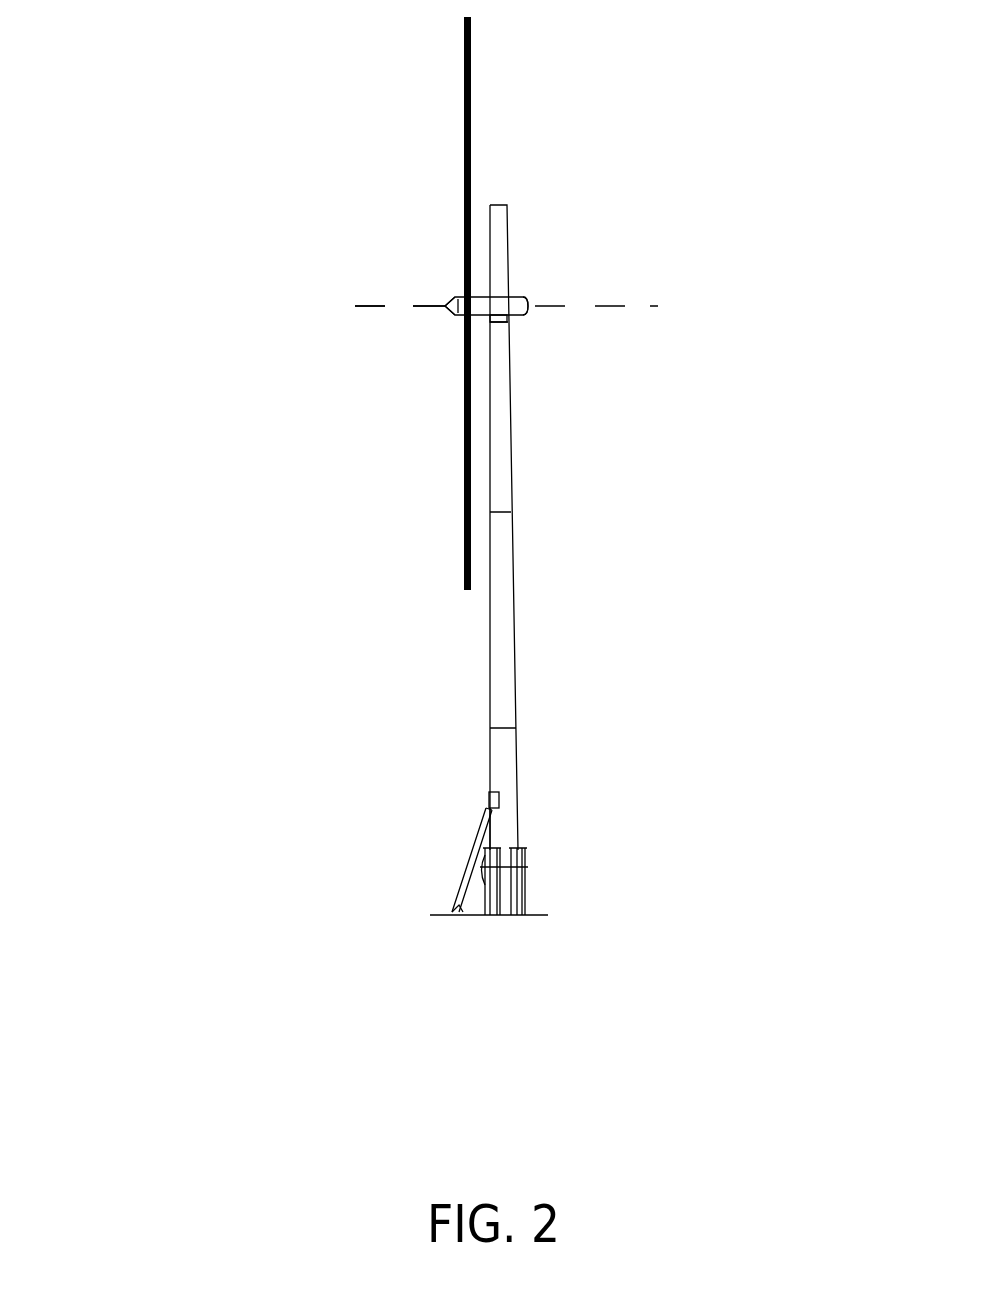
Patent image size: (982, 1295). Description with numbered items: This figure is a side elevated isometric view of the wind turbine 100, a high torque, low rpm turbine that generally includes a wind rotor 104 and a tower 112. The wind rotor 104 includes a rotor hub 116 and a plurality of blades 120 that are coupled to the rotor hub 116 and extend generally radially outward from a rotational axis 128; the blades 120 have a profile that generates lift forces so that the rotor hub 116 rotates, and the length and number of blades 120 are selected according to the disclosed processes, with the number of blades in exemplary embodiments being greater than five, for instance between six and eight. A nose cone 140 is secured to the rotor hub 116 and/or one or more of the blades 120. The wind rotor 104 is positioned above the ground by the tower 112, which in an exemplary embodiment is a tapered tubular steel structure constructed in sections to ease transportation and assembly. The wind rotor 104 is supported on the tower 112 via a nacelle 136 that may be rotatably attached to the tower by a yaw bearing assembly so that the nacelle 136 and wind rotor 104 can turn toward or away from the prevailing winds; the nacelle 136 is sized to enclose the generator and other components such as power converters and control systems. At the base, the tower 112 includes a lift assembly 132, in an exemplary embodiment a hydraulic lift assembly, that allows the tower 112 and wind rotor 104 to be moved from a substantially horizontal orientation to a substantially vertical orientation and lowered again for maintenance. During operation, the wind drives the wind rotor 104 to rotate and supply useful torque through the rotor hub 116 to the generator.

The wind turbine 100 is at (262, 150).
The wind rotor 104 is at (388, 293).
The tower 112 is at (535, 665).
The rotor hub 116 is at (462, 335).
The blades 120 is at (495, 132).
The rotational axis 128 is at (658, 306).
The lift assembly 132 is at (400, 875).
The nacelle 136 is at (530, 306).
The nose cone 140 is at (448, 298).